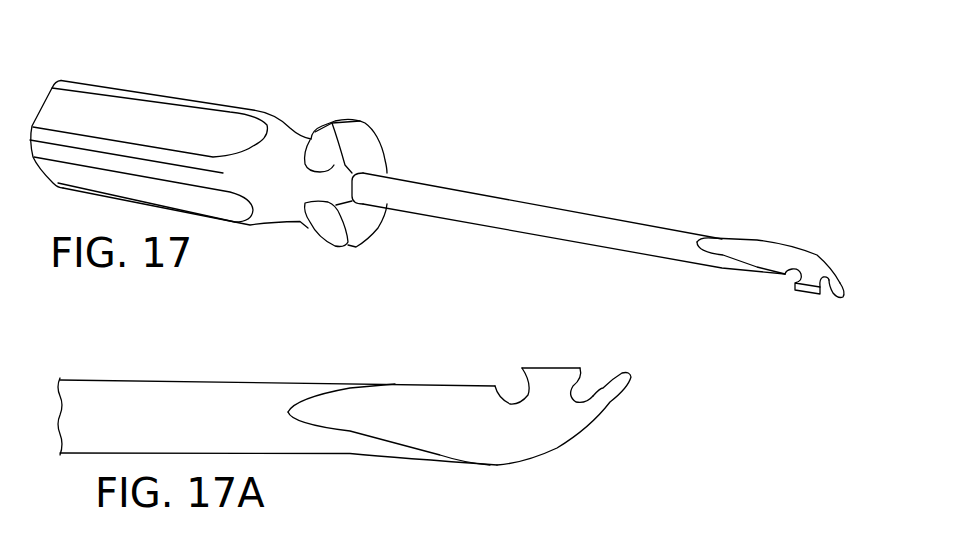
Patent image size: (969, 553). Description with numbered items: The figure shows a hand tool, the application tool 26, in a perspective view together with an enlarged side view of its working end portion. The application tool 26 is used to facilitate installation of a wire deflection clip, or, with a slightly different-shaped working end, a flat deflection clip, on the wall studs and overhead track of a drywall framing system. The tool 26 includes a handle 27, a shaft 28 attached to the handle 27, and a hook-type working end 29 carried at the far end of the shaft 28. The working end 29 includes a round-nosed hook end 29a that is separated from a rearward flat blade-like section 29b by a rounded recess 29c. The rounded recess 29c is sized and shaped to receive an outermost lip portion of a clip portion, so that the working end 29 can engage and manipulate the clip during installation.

In FIG. 17, the application tool 26 is at (581, 190).
In FIG. 17A, the application tool 26 is at (248, 362).
In FIG. 17, the handle 27 is at (200, 118).
In FIG. 17, the shaft 28 is at (657, 232).
In FIG. 17A, the shaft 28 is at (185, 388).
In FIG. 17, the working end 29 is at (739, 276).
In FIG. 17A, the working end 29 is at (592, 440).
In FIG. 17, the round-nosed hook end 29a is at (840, 268).
In FIG. 17A, the round-nosed hook end 29a is at (632, 380).
In FIG. 17, the flat blade-like section 29b is at (802, 292).
In FIG. 17A, the flat blade-like section 29b is at (545, 366).
In FIG. 17, the rounded recess 29c is at (838, 296).
In FIG. 17A, the rounded recess 29c is at (591, 386).